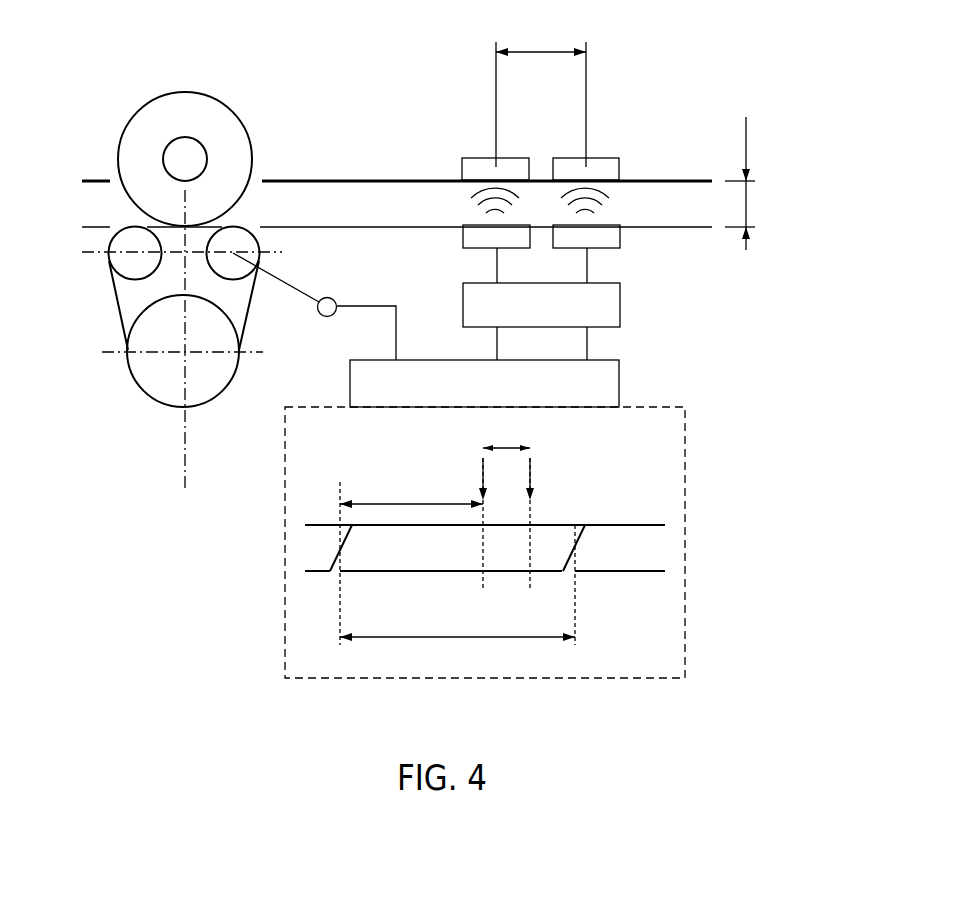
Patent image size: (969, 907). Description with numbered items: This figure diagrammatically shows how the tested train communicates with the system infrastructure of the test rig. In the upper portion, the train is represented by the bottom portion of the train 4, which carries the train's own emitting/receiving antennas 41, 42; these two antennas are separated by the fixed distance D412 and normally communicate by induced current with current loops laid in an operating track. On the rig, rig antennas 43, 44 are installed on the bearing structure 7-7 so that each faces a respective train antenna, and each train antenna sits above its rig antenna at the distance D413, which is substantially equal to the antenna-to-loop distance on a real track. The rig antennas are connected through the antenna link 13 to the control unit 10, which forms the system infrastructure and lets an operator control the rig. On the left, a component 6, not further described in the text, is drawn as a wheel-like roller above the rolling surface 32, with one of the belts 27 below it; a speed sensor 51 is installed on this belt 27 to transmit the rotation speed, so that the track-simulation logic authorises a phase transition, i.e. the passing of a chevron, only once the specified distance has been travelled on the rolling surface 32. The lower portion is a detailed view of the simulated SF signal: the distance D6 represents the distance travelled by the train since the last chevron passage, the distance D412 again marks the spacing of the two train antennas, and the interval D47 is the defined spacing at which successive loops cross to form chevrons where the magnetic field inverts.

The bottom portion of the train 4 is at (333, 183).
The upper roller 6 is at (202, 93).
The rolling surface 32 is at (117, 312).
The belt 27 is at (138, 398).
The speed sensor 51 is at (293, 288).
The emitting/receiving antenna 41 is at (473, 164).
The emitting/receiving antenna 42 is at (608, 164).
The rig antenna 43 is at (478, 233).
The rig antenna 44 is at (608, 238).
The antenna link 13 is at (587, 345).
The control unit 10 is at (535, 542).
The bearing structure 7-7 is at (668, 226).
The fixed distance between train antennas D412 is at (532, 304).
The antenna distance D413 is at (767, 183).
The distance travelled since last chevron D6 is at (411, 490).
The chevron interval D47 is at (457, 623).